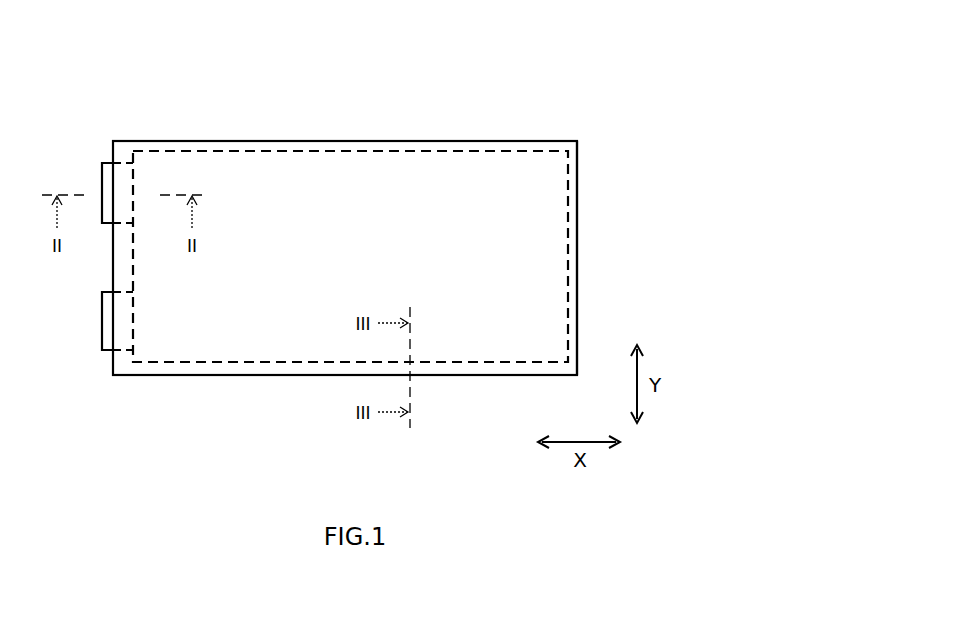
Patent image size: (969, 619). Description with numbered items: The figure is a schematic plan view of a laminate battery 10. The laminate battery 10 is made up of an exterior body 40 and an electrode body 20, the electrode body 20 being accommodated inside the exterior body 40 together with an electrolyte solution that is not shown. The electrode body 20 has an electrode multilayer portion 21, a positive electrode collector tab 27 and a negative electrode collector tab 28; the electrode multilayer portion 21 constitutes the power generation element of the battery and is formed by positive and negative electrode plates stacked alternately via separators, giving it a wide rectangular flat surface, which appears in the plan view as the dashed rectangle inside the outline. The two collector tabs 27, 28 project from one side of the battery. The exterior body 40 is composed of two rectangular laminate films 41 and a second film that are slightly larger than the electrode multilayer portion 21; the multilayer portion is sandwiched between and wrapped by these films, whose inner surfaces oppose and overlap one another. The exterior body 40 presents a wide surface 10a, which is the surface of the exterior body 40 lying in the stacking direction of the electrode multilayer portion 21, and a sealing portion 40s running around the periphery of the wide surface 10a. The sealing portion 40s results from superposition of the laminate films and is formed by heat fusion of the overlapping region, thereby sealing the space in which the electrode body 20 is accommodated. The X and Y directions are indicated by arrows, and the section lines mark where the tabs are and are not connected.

The laminate battery 10 is at (565, 96).
The wide surface 10a is at (528, 230).
The electrode body 20 is at (318, 148).
The electrode multilayer portion 21 is at (276, 170).
The positive electrode collector tab 27 is at (108, 318).
The negative electrode collector tab 28 is at (108, 190).
The exterior body 40 is at (426, 116).
The laminate film 41 is at (449, 136).
The sealing portion 40s is at (467, 376).